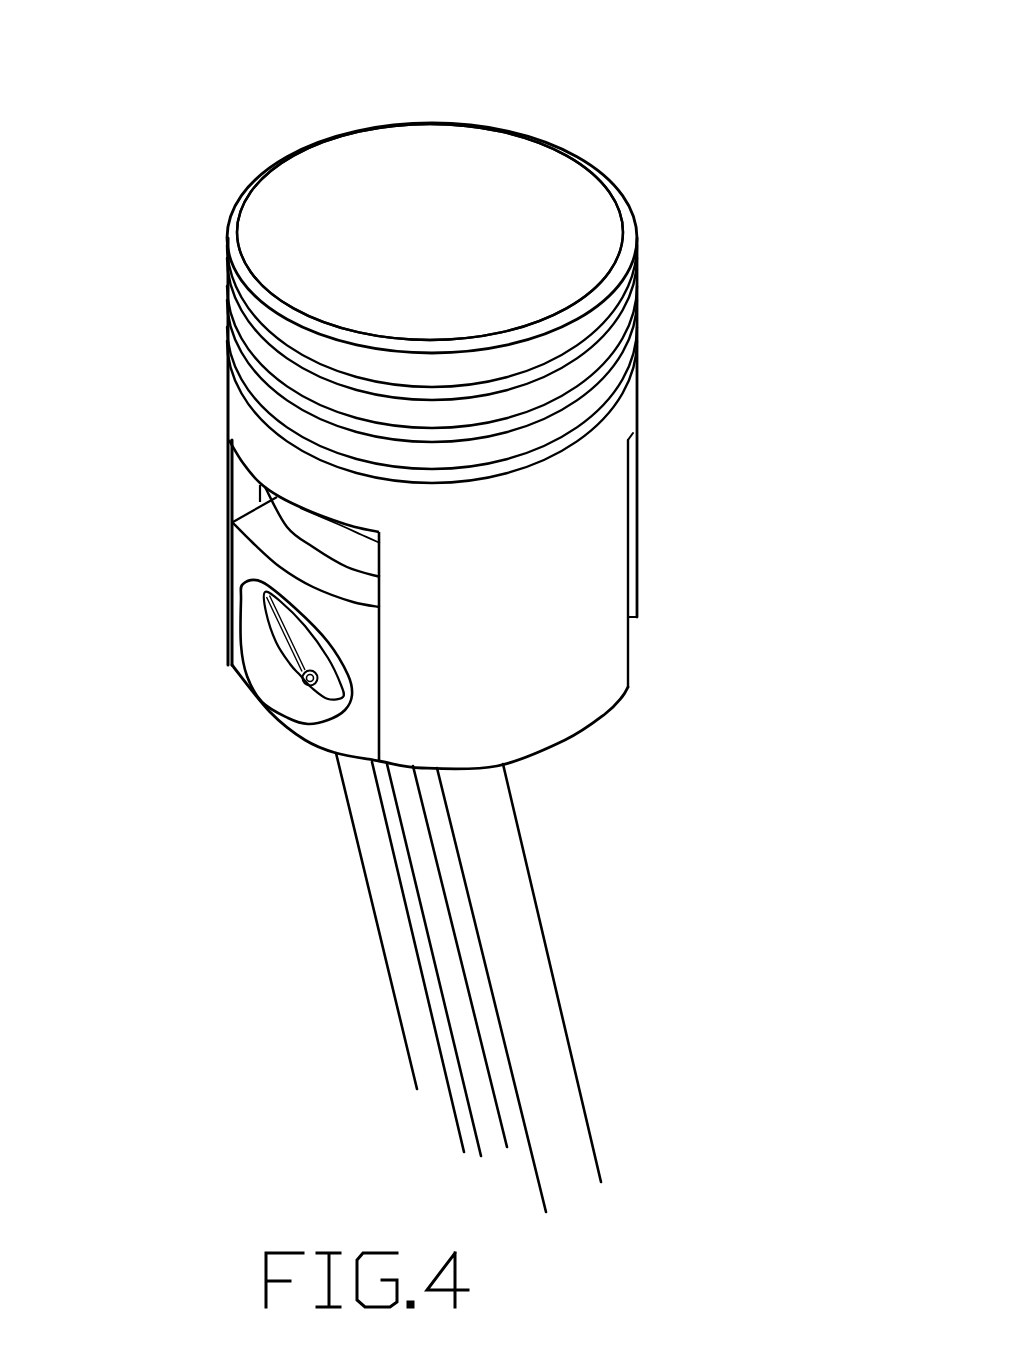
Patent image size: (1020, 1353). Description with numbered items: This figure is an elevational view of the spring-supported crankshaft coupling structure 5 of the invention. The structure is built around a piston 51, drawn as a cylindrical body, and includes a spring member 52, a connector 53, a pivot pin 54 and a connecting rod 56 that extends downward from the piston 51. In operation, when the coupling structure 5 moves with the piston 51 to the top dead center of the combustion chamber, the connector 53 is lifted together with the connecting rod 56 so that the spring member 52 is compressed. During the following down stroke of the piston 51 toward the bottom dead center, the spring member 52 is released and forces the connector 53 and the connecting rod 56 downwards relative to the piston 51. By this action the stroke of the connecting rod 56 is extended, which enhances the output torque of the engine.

The spring-supported crankshaft coupling structure 5 is at (712, 332).
The piston 51 is at (480, 195).
The spring member 52 is at (310, 527).
The connector 53 is at (282, 556).
The pivot pin 54 is at (335, 662).
The connecting rod 56 is at (498, 897).